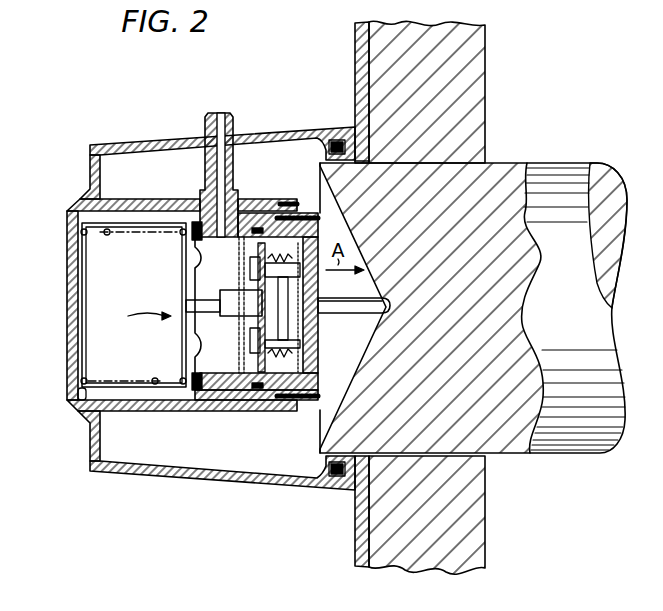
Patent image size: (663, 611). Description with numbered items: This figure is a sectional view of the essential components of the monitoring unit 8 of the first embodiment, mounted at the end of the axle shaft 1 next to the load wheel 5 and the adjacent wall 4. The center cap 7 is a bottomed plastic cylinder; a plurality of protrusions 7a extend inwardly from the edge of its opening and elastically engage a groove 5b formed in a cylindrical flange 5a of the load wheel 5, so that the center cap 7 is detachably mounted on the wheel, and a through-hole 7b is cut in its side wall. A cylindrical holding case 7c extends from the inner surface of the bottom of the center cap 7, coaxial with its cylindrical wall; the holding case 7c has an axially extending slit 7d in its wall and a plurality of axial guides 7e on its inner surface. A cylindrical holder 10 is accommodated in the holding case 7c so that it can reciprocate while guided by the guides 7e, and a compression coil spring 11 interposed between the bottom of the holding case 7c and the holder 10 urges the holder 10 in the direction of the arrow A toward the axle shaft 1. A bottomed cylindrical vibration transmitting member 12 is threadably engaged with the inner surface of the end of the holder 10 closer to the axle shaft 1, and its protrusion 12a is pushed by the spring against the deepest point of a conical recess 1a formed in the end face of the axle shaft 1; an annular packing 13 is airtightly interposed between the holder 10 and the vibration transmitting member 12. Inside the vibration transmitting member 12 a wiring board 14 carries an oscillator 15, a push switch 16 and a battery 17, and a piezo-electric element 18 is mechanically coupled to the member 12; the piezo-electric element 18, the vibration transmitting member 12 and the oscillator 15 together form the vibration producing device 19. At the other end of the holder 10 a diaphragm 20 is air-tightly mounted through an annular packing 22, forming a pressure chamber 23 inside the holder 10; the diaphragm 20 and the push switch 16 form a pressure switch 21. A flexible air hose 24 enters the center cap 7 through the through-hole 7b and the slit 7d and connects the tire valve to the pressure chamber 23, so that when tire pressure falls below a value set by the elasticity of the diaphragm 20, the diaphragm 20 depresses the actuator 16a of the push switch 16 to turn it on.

The axle shaft 1 is at (505, 170).
The conical recess 1a is at (320, 418).
The wall 4 is at (483, 40).
The load wheel 5 is at (357, 47).
The cylindrical flange 5a is at (355, 166).
The groove 5b is at (340, 143).
The center cap 7 is at (121, 475).
The protrusions 7a is at (317, 137).
The through-hole 7b is at (236, 133).
The holding case 7c is at (144, 411).
The slit 7d is at (145, 202).
The guides 7e is at (138, 220).
The monitoring unit 8 is at (193, 298).
The holder 10 is at (234, 404).
The compression coil spring 11 is at (78, 396).
The vibration transmitting member 12 is at (320, 360).
The protrusion 12a is at (340, 318).
The annular packing 13 is at (258, 404).
The wiring board 14 is at (242, 360).
The oscillator 15 is at (238, 262).
The push switch 16 is at (222, 320).
The actuator 16a is at (183, 293).
The battery 17 is at (250, 340).
The piezo-electric element 18 is at (319, 276).
The vibration producing device 19 is at (300, 200).
The diaphragm 20 is at (184, 331).
The pressure switch 21 is at (137, 315).
The annular packing 22 is at (206, 392).
The pressure chamber 23 is at (195, 291).
The air hose 24 is at (203, 124).